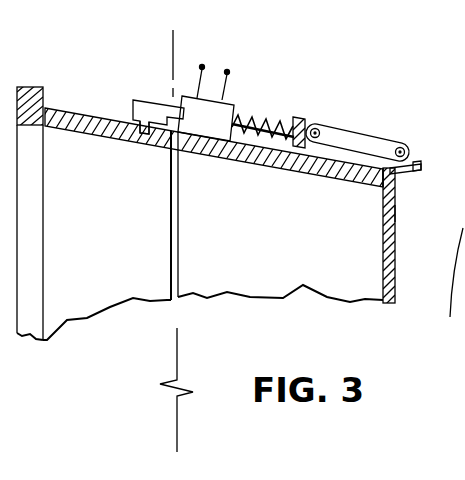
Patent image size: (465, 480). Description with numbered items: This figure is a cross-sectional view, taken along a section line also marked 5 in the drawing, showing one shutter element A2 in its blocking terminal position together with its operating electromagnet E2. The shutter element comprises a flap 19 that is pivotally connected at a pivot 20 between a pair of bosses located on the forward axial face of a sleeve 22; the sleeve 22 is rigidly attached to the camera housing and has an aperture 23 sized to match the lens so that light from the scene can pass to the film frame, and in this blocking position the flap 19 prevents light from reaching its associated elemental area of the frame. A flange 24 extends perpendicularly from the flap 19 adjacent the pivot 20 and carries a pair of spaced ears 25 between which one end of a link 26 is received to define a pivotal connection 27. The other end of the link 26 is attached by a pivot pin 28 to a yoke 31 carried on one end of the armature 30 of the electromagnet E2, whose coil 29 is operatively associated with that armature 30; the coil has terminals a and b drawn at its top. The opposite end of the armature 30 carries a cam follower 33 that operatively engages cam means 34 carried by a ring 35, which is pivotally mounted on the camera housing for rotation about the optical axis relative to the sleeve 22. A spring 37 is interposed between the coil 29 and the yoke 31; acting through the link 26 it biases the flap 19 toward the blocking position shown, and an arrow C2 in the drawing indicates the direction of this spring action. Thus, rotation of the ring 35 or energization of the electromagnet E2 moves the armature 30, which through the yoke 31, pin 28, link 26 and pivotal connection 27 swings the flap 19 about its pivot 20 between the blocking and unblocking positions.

The section line 5- 5 is at (183, 43).
The flap 19 is at (395, 258).
The pivot 20 is at (393, 174).
The sleeve 22 is at (330, 288).
The aperture 23 is at (300, 181).
The flange 24 is at (423, 169).
The ears 25 is at (421, 163).
The link 26 is at (372, 127).
The pivotal connection 27 is at (406, 145).
The pivot pin 28 is at (323, 128).
The coil 29 is at (233, 105).
The armature 30 is at (160, 98).
The yoke 31 is at (301, 116).
The cam follower 33 is at (128, 121).
The cam means 34 is at (88, 135).
The ring 35 is at (37, 335).
The spring 37 is at (258, 116).
The shutter element A2 is at (402, 213).
The spring force direction C2 is at (283, 92).
The electromagnet E2 is at (219, 47).
The terminal a is at (201, 72).
The terminal b is at (226, 73).